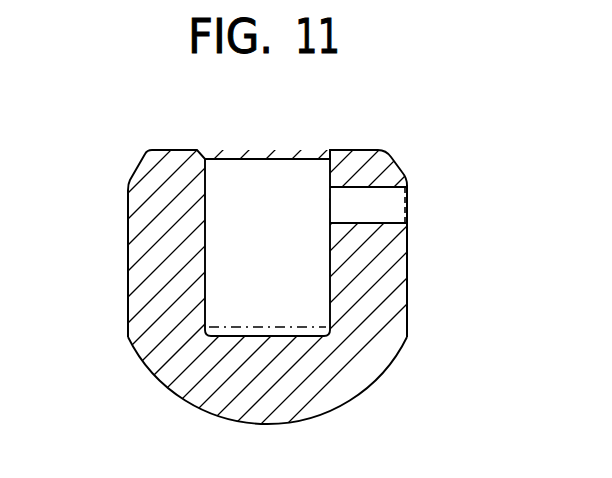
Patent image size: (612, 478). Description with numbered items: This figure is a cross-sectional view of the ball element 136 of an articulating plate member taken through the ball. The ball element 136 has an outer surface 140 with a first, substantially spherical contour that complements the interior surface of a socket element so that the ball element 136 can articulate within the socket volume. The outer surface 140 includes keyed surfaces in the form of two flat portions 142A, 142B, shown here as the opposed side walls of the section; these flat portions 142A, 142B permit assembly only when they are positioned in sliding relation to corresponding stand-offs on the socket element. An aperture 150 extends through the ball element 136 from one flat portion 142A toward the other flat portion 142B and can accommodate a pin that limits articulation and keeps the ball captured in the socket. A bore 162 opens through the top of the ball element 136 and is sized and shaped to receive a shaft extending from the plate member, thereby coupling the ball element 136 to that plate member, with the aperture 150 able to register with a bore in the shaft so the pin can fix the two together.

The ball element 136 is at (290, 106).
The outer surface 140 is at (385, 368).
The flat portion 142A is at (412, 253).
The flat portion 142B is at (119, 235).
The aperture 150 is at (395, 200).
The bore 162 is at (293, 185).